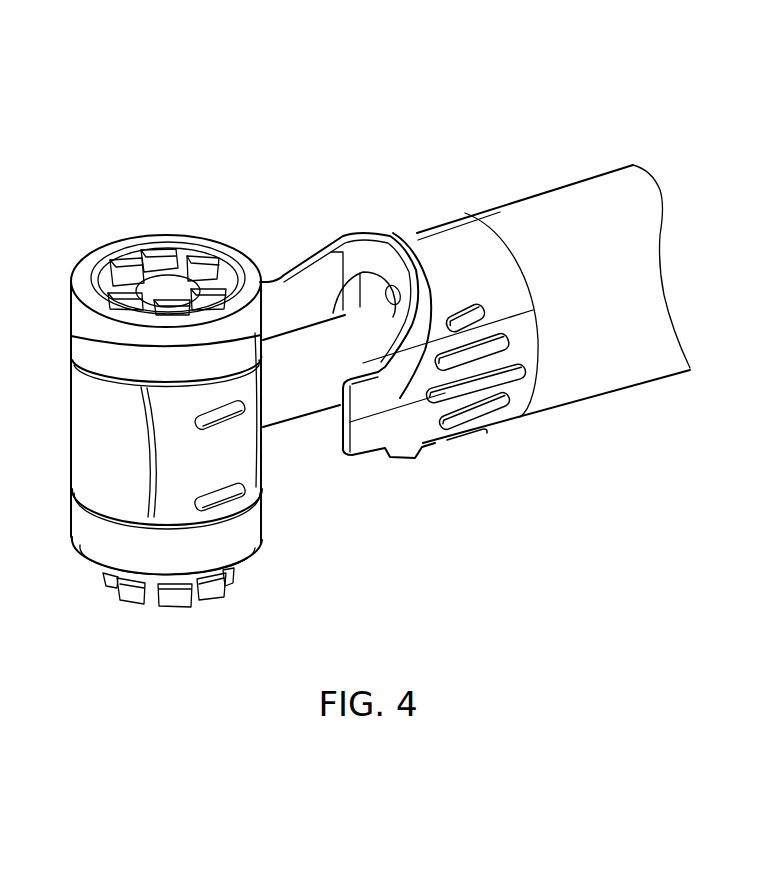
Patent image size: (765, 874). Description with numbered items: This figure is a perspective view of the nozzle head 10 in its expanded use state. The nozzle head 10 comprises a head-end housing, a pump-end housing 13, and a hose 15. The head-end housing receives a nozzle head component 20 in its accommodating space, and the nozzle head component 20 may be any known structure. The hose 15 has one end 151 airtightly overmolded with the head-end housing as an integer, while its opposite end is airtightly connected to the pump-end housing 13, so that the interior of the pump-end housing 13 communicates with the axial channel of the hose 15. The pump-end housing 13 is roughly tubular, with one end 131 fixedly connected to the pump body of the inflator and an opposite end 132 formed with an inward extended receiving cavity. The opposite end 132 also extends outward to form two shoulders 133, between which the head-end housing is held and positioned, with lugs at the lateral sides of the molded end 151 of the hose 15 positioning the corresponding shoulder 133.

The nozzle head 10 is at (449, 100).
The pump-end housing 13 is at (500, 272).
The end of pump-end housing 131 is at (609, 216).
The opposite end of pump-end housing 132 is at (367, 257).
The shoulders 133 is at (367, 435).
The hose 15 is at (288, 388).
The end of hose 151 is at (102, 442).
The nozzle head component 20 is at (172, 288).